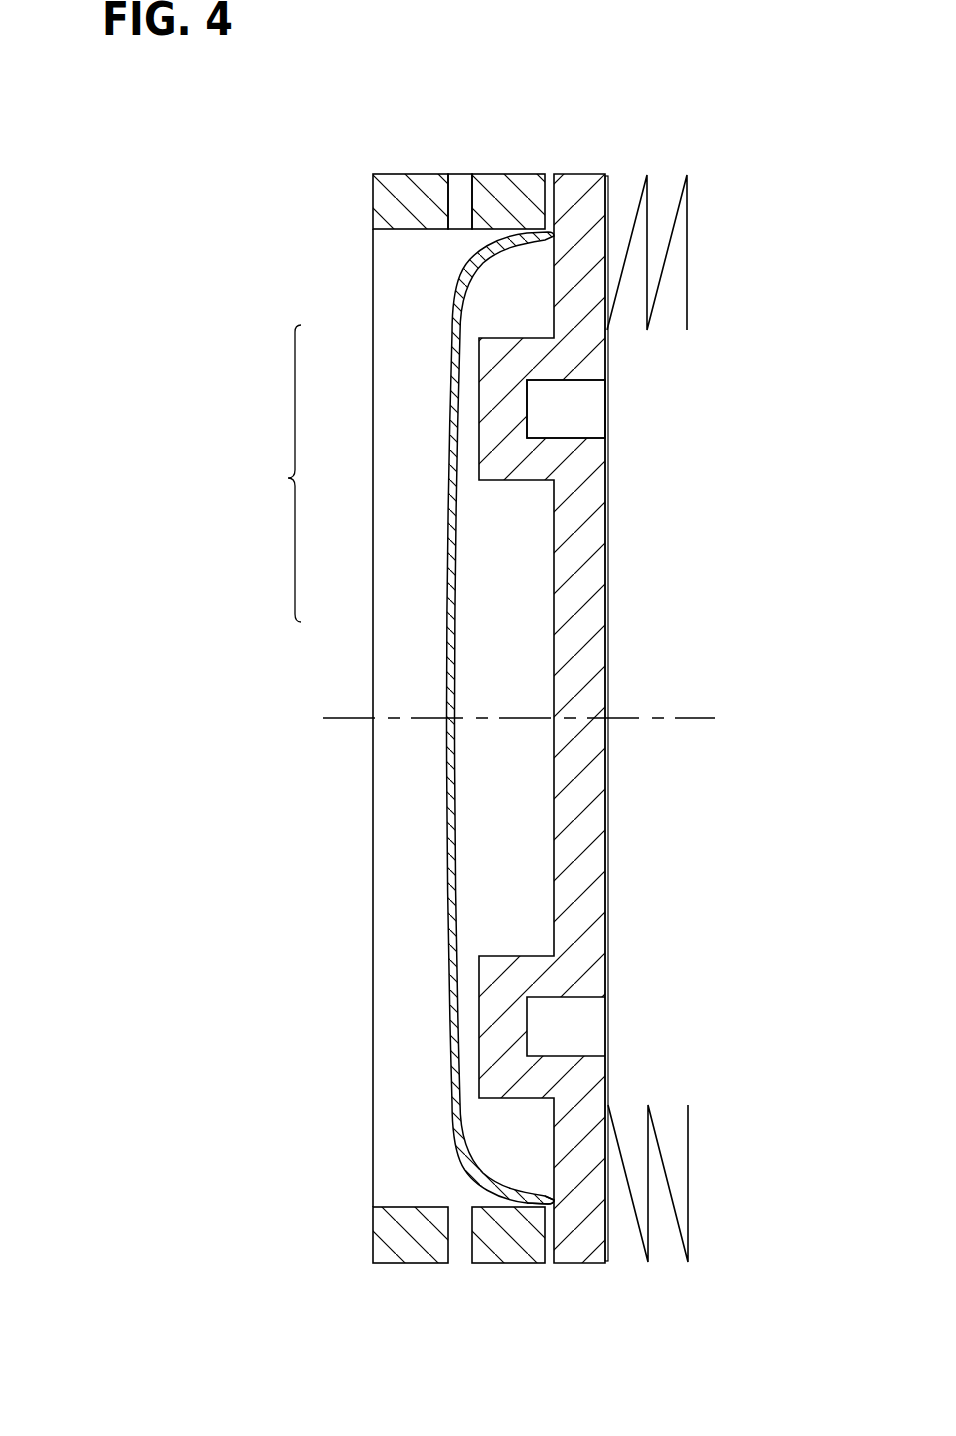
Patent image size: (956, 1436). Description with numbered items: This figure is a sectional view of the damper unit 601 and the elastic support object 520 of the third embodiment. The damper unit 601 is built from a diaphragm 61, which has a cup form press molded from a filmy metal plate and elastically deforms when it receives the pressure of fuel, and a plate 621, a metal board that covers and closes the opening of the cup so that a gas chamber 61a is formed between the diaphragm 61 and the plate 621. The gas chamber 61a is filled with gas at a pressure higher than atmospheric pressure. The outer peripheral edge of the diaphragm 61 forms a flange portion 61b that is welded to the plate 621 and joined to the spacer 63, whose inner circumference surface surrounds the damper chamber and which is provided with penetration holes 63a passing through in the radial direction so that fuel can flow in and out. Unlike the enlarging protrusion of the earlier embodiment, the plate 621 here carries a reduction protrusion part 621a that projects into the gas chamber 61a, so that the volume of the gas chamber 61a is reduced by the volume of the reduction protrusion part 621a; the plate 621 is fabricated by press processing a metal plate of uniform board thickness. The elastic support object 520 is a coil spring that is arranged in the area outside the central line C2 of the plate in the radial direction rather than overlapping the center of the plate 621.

The damper unit 601 is at (270, 473).
The diaphragm 61 is at (446, 610).
The gas chamber 61a is at (495, 793).
The flange portion 61b is at (545, 1234).
The plate 621 is at (585, 553).
The reduction protrusion part 621a is at (530, 407).
The spacer 63 is at (419, 231).
The penetration hole 63a is at (463, 174).
The elastic support object 520 is at (688, 1182).
The central line C2 is at (539, 721).